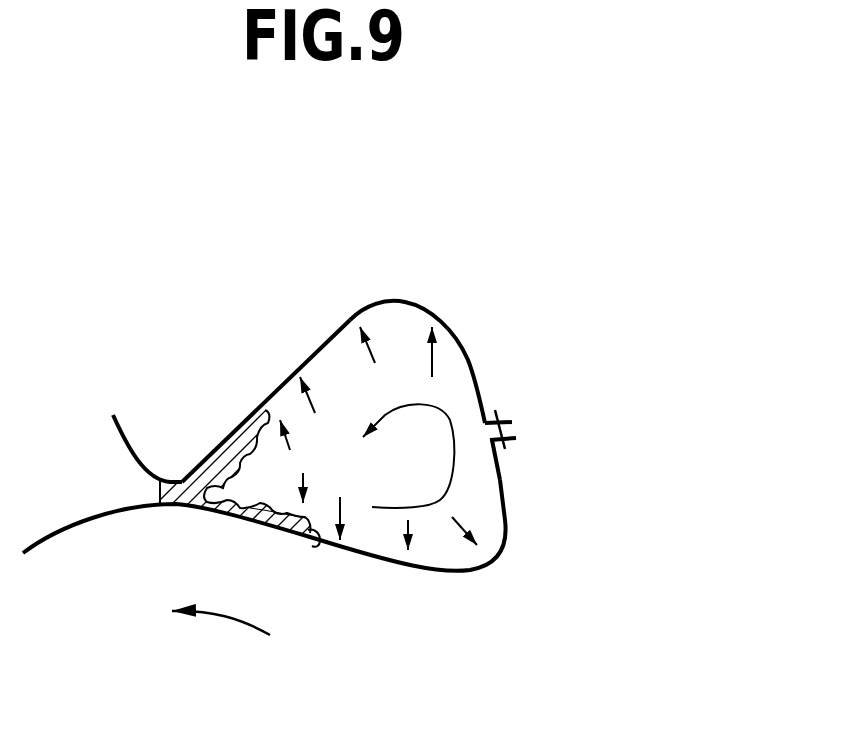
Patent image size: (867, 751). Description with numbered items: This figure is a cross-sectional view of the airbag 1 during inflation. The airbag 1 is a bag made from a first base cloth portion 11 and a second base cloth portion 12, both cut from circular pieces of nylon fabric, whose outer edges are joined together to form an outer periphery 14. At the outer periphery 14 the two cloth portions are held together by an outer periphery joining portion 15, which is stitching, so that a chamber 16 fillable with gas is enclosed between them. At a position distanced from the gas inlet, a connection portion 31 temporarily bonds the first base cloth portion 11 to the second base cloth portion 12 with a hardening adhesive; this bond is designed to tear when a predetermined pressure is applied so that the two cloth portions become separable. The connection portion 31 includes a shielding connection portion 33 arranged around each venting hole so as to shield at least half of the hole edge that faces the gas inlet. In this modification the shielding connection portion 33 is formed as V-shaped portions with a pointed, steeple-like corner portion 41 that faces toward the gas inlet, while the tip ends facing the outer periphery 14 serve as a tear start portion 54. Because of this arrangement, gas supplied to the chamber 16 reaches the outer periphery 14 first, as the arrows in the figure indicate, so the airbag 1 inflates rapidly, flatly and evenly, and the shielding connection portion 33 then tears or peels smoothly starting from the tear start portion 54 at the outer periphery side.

The airbag 1 is at (514, 250).
The first base cloth portion 11 is at (417, 568).
The second base cloth portion 12 is at (348, 318).
The outer periphery 14 is at (503, 422).
The outer periphery joining portion 15 is at (497, 412).
The chamber 16 is at (107, 465).
The connection portion 31 is at (246, 534).
The shielding connection portion 33 is at (287, 538).
The corner portion 41 is at (153, 500).
The tear start portion 54 is at (318, 531).